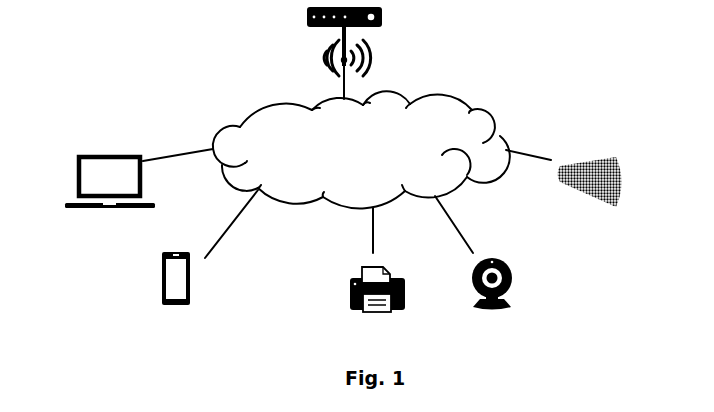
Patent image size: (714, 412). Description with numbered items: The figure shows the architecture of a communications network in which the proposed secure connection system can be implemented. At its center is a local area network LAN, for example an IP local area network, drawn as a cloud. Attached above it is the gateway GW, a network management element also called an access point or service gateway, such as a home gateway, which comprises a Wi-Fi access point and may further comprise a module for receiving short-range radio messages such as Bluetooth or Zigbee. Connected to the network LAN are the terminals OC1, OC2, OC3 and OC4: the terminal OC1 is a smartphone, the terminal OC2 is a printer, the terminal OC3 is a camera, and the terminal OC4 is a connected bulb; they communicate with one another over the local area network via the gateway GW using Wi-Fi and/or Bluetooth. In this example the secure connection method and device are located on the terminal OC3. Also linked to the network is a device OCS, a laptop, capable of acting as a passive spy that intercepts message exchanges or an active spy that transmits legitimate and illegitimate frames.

The gateway GW is at (300, 12).
The local area network LAN is at (361, 149).
The spy device OCS is at (104, 153).
The smartphone terminal OC1 is at (155, 285).
The printer terminal OC2 is at (355, 268).
The camera terminal OC3 is at (510, 252).
The connected bulb terminal OC4 is at (610, 162).